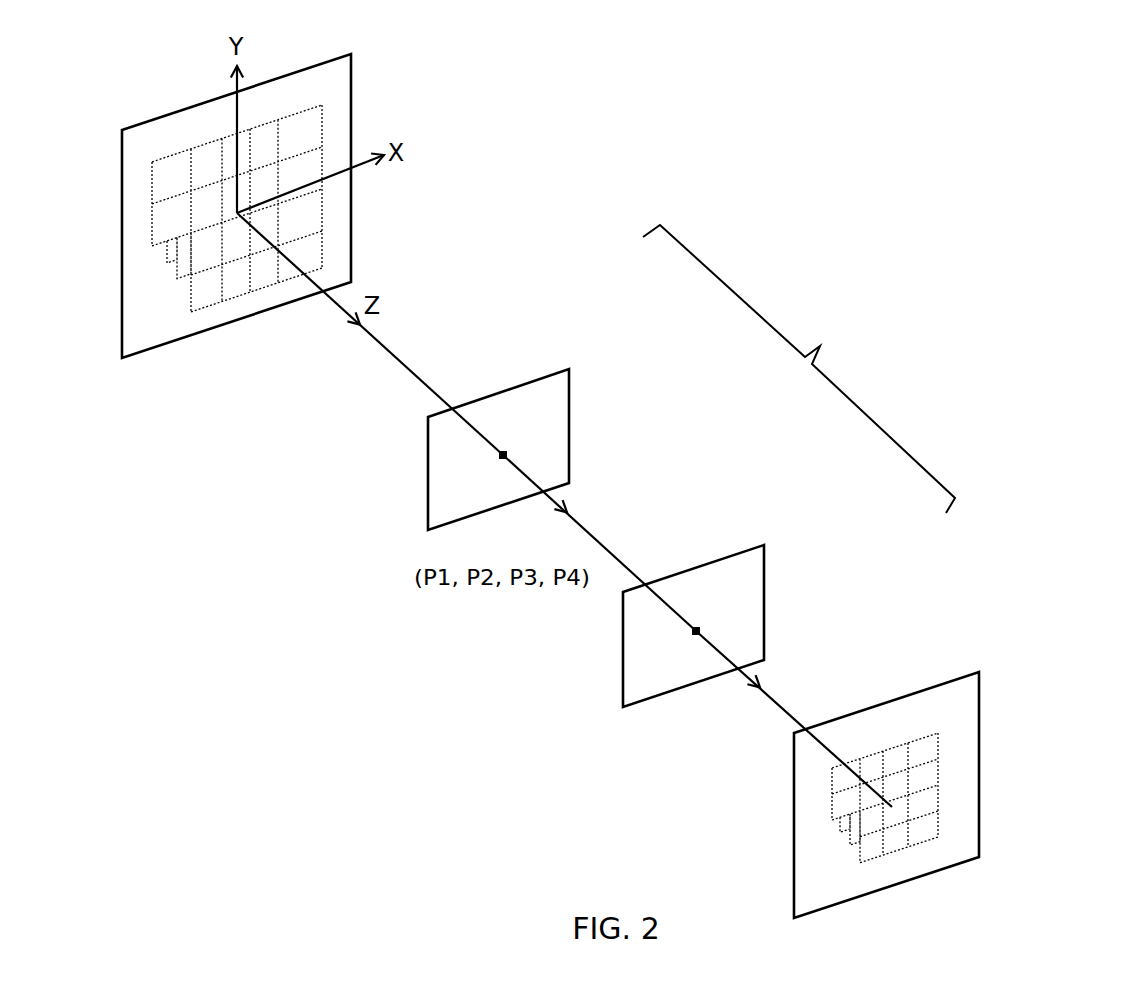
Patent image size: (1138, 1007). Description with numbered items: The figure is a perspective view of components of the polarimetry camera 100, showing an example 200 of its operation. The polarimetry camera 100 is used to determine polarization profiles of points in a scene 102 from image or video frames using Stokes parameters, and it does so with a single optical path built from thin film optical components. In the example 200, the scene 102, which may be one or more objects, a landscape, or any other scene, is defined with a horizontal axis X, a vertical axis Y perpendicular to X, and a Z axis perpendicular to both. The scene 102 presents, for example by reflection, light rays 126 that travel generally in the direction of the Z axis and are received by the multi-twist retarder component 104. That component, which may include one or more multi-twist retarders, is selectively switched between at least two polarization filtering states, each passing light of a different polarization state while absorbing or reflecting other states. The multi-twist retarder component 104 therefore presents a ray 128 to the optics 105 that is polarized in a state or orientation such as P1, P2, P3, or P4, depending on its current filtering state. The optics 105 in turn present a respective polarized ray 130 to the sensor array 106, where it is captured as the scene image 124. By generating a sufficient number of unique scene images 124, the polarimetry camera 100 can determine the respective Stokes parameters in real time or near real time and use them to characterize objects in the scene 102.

The polarimetry camera 100 is at (820, 346).
The scene 102 is at (352, 73).
The multi-twist retarder component 104 is at (547, 377).
The optics 105 is at (750, 548).
The sensor array 106 is at (965, 673).
The scene image 124 is at (945, 808).
The light rays 126 is at (403, 362).
The ray 128 is at (593, 535).
The polarized ray 130 is at (770, 698).
The example 200 is at (880, 162).